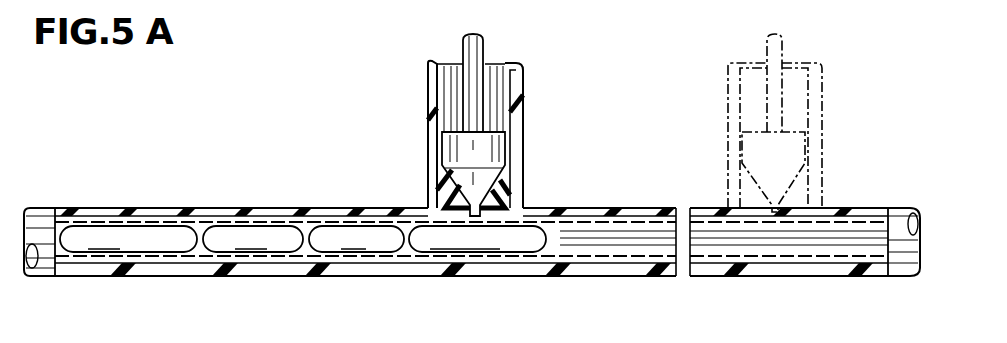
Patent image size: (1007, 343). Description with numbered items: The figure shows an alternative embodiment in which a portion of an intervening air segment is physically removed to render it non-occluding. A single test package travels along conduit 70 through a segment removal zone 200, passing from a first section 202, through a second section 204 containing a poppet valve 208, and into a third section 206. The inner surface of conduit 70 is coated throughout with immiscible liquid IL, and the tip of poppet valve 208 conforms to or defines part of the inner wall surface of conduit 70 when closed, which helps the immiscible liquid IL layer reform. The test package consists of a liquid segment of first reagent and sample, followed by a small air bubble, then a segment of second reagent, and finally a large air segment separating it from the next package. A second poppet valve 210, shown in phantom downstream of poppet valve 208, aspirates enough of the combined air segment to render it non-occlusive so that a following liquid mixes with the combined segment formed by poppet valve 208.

The conduit 70 is at (40, 210).
The segment removal zone 200 is at (312, 134).
The first section 202 is at (282, 184).
The second section 204 is at (427, 207).
The third section 206 is at (575, 209).
The poppet valve 208 is at (524, 148).
The second poppet valve 210 is at (822, 147).
The immiscible liquid IL is at (147, 263).